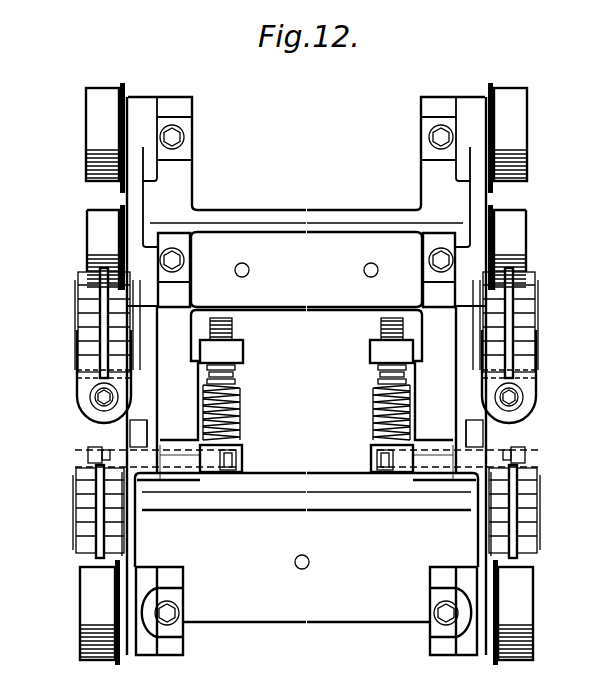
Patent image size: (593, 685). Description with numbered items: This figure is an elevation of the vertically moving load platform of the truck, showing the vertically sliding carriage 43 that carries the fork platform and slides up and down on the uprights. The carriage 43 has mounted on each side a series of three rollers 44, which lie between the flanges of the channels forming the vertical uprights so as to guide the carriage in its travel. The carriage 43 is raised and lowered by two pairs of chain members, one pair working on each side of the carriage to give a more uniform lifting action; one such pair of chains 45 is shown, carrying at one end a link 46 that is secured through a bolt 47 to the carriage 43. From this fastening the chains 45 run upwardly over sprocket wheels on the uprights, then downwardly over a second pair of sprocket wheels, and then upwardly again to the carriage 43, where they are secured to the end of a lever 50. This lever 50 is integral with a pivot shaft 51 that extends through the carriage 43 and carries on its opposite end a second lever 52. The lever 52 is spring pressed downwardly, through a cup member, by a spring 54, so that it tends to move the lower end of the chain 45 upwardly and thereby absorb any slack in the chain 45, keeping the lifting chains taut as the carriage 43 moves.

The vertically sliding carriage 43 is at (221, 622).
The rollers 44 is at (95, 135).
The pair of chain members 45 is at (78, 330).
The link 46 is at (82, 398).
The bolt 47 is at (96, 408).
The lever 50 is at (88, 457).
The pivot shaft 51 is at (177, 470).
The lever 52 is at (232, 472).
The spring 54 is at (238, 390).